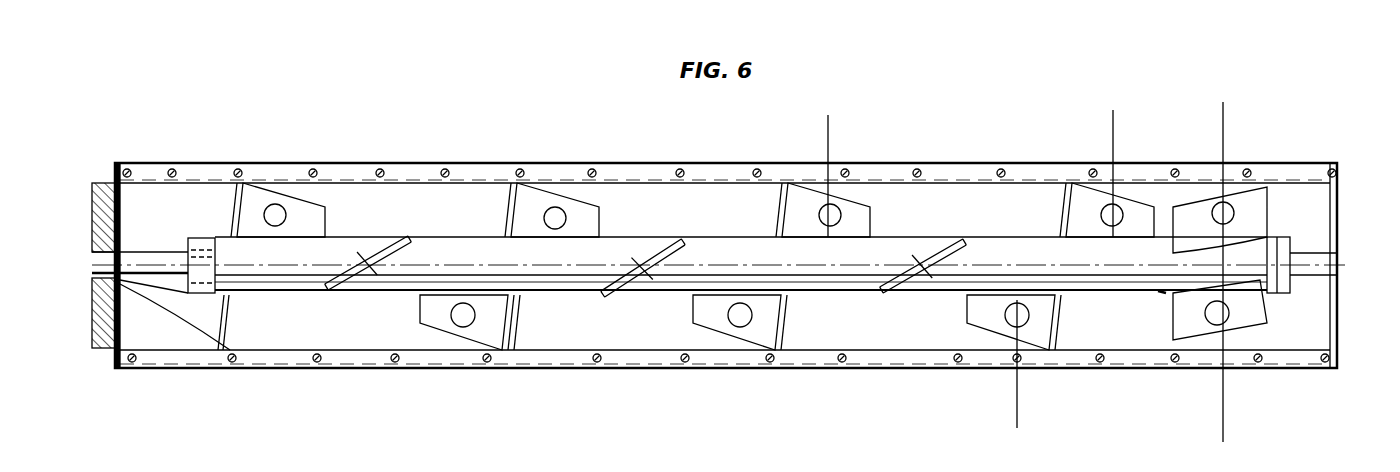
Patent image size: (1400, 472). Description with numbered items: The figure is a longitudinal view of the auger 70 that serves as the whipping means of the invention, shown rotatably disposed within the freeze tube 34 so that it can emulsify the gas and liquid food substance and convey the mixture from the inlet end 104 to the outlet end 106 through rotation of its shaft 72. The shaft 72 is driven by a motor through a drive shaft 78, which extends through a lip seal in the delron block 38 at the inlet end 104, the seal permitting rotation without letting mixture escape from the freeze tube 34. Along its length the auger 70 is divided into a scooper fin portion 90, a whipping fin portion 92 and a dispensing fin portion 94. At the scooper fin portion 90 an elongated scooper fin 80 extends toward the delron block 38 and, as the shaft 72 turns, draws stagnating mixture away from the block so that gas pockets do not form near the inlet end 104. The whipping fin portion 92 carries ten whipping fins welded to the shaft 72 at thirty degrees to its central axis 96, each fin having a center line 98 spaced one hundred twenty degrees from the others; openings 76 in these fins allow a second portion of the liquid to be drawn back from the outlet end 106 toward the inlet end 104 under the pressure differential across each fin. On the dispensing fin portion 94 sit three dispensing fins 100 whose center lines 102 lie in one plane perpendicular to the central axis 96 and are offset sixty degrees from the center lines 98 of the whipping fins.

The freeze tube 34 is at (620, 182).
The delron block 38 is at (92, 214).
The auger 70 is at (692, 262).
The shaft 72 is at (1003, 237).
The openings 76 is at (283, 214).
The drive shaft 78 is at (153, 252).
The scooper fin 80 is at (167, 315).
The scooper fin portion 90 is at (248, 296).
The whipping fin portion 92 is at (527, 300).
The dispensing fin portion 94 is at (1160, 293).
The central axis 96 is at (463, 263).
The center line 98 is at (830, 158).
The dispensing fins 100 is at (1268, 190).
The center lines 102 is at (1225, 128).
The inlet end 104 is at (753, 223).
The outlet end 106 is at (1332, 163).